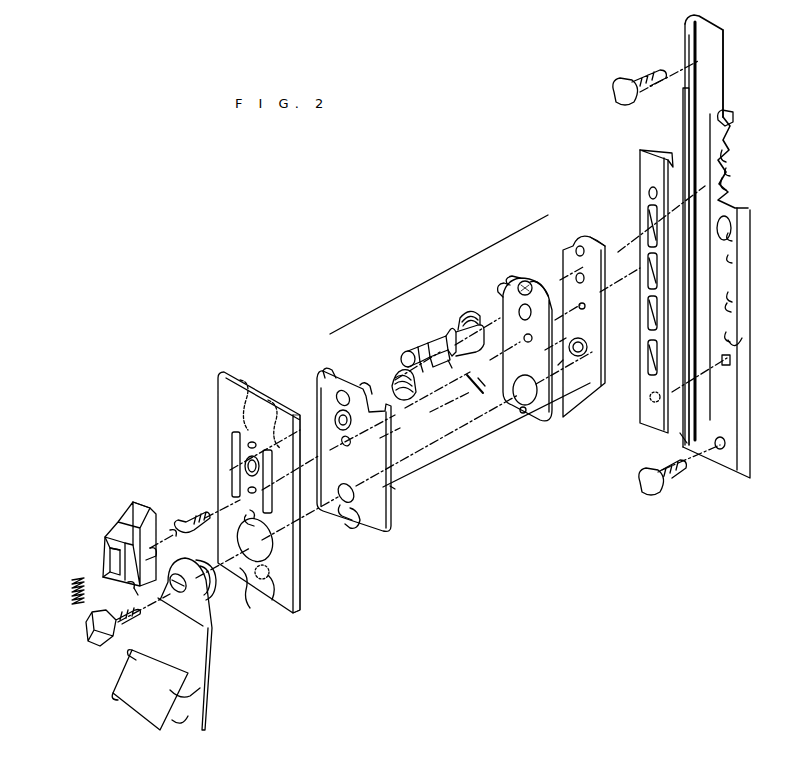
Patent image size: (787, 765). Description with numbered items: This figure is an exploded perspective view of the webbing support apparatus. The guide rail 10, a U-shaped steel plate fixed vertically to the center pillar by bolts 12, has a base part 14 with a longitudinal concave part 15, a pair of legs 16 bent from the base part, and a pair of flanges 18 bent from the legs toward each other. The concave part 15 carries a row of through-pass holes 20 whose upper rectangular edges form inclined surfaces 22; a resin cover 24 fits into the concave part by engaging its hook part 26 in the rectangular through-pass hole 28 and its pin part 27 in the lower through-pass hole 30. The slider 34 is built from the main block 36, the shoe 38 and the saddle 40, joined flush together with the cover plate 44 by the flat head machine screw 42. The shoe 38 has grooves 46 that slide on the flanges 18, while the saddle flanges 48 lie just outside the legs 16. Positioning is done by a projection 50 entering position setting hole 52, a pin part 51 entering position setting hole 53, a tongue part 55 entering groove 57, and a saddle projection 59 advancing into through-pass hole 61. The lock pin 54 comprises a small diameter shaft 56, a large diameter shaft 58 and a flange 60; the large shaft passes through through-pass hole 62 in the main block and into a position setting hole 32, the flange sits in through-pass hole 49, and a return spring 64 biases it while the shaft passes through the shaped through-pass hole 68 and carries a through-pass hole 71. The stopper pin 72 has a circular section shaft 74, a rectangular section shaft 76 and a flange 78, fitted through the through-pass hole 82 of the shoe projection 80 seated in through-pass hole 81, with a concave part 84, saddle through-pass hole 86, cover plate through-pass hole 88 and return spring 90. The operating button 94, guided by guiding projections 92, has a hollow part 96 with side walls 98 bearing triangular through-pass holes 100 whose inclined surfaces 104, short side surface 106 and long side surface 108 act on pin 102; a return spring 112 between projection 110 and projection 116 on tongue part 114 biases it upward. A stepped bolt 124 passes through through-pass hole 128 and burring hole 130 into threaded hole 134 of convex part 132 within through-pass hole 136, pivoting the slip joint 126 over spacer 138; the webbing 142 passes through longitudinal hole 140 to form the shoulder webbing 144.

The guide rail 10 is at (680, 55).
The bolts 12 is at (614, 95).
The base part 14 is at (724, 100).
The longitudinal concave part 15 is at (728, 156).
The legs 16 is at (690, 62).
The flanges 18 is at (685, 100).
The through-pass holes 20 is at (727, 140).
The inclined surface 22 is at (730, 174).
The cover 24 is at (638, 153).
The hook part 26 is at (645, 150).
The pin part 27 is at (650, 398).
The rectangular through-pass hole 28 is at (733, 118).
The through-pass hole 30 is at (731, 360).
The position setting hole 32 is at (648, 190).
The slider 34 is at (448, 280).
The main block 36 is at (588, 383).
The shoe 38 is at (530, 428).
The saddle 40 is at (386, 534).
The flat head machine screw 42 is at (182, 518).
The cover plate 44 is at (216, 384).
The grooves 46 is at (524, 279).
The flanges 48 is at (322, 368).
The through-pass hole 49 is at (531, 340).
The projection 50 is at (356, 530).
The pin part 51 is at (244, 390).
The position setting hole 52 is at (518, 405).
The position setting hole 53 is at (332, 368).
The lock pin 54 is at (476, 366).
The tongue part 55 is at (268, 585).
The small diameter shaft 56 is at (438, 364).
The groove 57 is at (340, 518).
The large diameter shaft 58 is at (479, 326).
The projection 59 is at (352, 422).
The flange 60 is at (452, 330).
The through-pass hole 61 is at (248, 444).
The through-pass hole 62 is at (604, 246).
The return spring 64 is at (406, 402).
The through-pass hole 68 is at (349, 446).
The through-pass hole 71 is at (447, 372).
The stopper pin 72 is at (422, 345).
The circular section shaft 74 is at (405, 352).
The rectangular section shaft 76 is at (440, 338).
The flange 78 is at (423, 376).
The projection 80 is at (544, 282).
The through-pass hole 81 is at (580, 244).
The through-pass hole 82 is at (511, 278).
The concave part 84 is at (506, 292).
The through-pass hole 86 is at (350, 388).
The through-pass hole 88 is at (240, 440).
The return spring 90 is at (469, 312).
The guiding projections 92 is at (220, 395).
The operating button 94 is at (105, 515).
The hollow part 96 is at (110, 556).
The side walls 98 is at (108, 540).
The through-pass holes 100 is at (120, 522).
The pin 102 is at (472, 382).
The inclined surfaces 104 is at (152, 556).
The short side surface 106 is at (130, 586).
The long side surface 108 is at (140, 504).
The projection 110 is at (132, 594).
The return spring 112 is at (70, 598).
The tongue part 114 is at (246, 522).
The projection 116 is at (274, 470).
The stepped bolt 124 is at (86, 630).
The slip joint 126 is at (210, 652).
The through-pass hole 128 is at (255, 585).
The burring hole 130 is at (340, 500).
The convex part 132 is at (568, 375).
The threaded hole 134 is at (588, 340).
The through-pass hole 136 is at (550, 424).
The spacer 138 is at (214, 590).
The longitudinal hole 140 is at (196, 688).
The webbing 142 is at (130, 656).
The shoulder webbing 144 is at (112, 692).